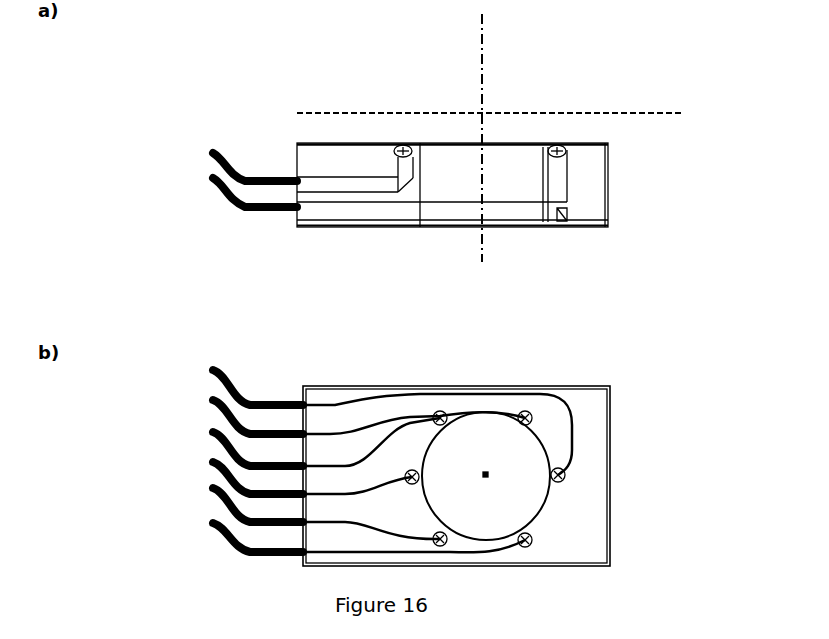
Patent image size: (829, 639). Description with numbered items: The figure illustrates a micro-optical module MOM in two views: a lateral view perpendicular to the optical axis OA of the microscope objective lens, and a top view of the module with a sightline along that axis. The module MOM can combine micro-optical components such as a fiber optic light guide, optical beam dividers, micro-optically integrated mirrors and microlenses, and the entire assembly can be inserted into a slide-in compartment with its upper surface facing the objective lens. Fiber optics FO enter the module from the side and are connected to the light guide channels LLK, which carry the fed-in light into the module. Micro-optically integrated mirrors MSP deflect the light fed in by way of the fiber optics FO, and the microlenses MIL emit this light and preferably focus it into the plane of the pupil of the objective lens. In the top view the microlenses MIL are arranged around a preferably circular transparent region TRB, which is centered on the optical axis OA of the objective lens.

The fiber optics FO is at (200, 148).
The light guide channels LLK is at (380, 180).
The microlenses MIL is at (402, 145).
The transparent region TRB is at (497, 155).
The micro-optical module MOM is at (597, 170).
The optical axis OA is at (478, 244).
The micro-optically integrated mirrors MSP is at (567, 224).